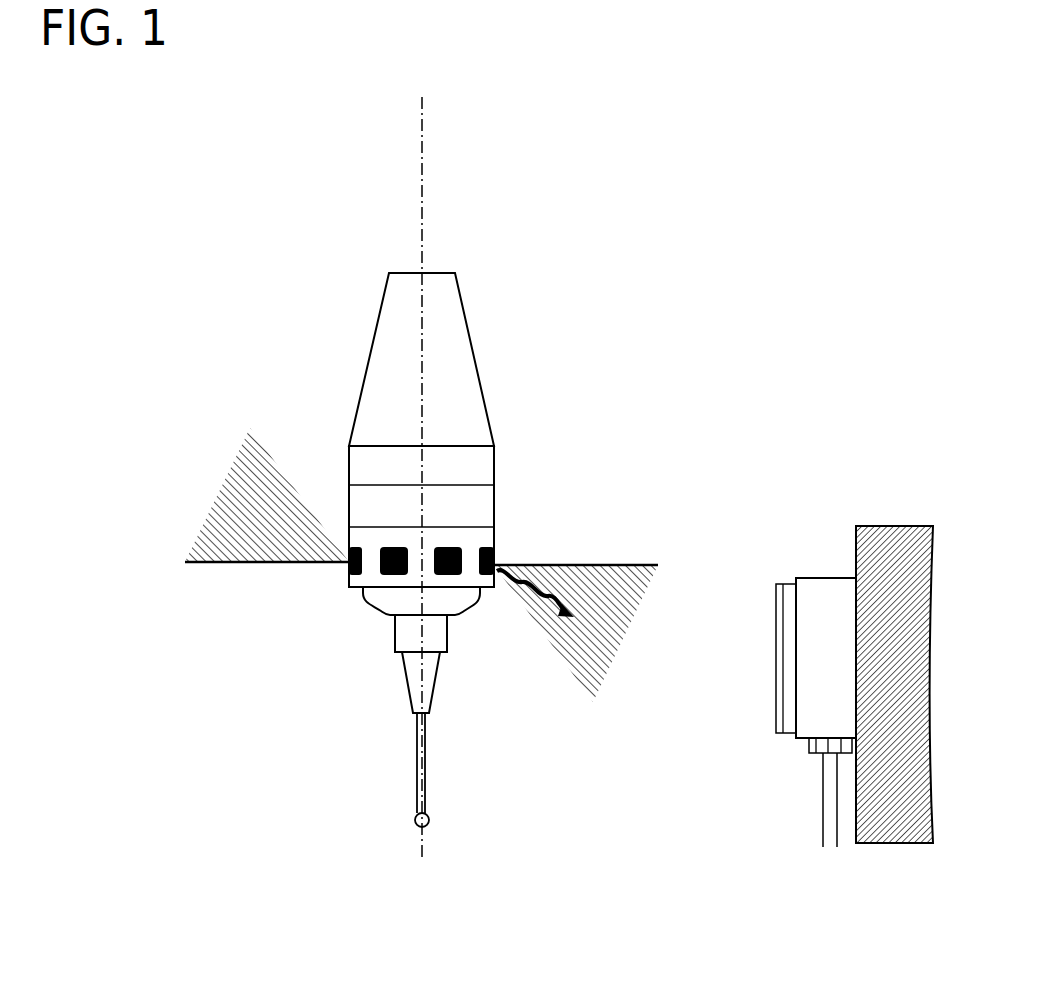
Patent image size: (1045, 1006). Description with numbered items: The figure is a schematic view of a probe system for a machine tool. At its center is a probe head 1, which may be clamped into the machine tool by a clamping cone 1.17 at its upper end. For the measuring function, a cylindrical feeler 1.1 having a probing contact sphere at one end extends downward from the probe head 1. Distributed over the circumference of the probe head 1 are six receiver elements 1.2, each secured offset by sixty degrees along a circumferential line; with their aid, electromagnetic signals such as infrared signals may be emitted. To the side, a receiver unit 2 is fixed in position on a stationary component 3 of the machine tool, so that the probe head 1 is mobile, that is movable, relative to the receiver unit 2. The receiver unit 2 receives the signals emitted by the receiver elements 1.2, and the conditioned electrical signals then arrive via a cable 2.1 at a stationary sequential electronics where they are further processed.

The probe head 1 is at (421, 477).
The cylindrical feeler 1.1 is at (425, 811).
The receiver elements 1.2 is at (495, 562).
The clamping cone 1.17 is at (482, 408).
The receiver unit 2 is at (807, 552).
The cable 2.1 is at (830, 840).
The stationary component 3 is at (890, 545).